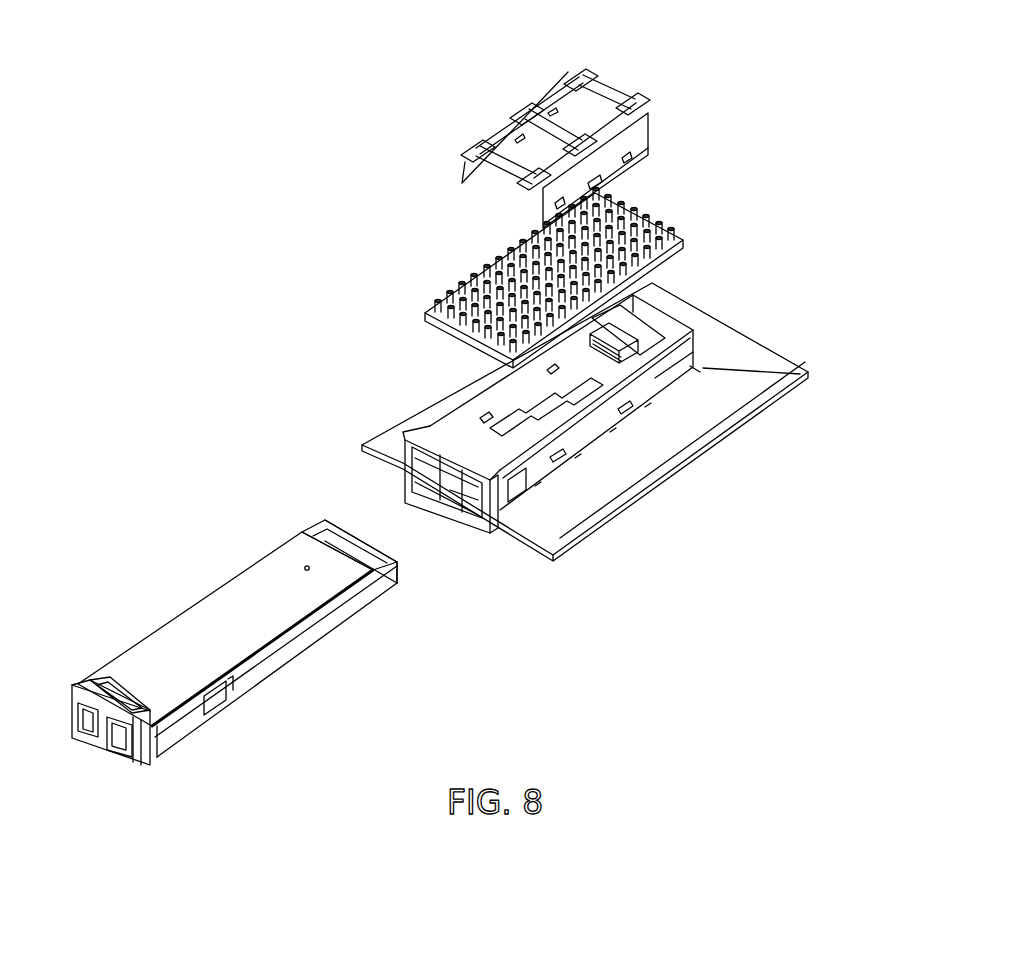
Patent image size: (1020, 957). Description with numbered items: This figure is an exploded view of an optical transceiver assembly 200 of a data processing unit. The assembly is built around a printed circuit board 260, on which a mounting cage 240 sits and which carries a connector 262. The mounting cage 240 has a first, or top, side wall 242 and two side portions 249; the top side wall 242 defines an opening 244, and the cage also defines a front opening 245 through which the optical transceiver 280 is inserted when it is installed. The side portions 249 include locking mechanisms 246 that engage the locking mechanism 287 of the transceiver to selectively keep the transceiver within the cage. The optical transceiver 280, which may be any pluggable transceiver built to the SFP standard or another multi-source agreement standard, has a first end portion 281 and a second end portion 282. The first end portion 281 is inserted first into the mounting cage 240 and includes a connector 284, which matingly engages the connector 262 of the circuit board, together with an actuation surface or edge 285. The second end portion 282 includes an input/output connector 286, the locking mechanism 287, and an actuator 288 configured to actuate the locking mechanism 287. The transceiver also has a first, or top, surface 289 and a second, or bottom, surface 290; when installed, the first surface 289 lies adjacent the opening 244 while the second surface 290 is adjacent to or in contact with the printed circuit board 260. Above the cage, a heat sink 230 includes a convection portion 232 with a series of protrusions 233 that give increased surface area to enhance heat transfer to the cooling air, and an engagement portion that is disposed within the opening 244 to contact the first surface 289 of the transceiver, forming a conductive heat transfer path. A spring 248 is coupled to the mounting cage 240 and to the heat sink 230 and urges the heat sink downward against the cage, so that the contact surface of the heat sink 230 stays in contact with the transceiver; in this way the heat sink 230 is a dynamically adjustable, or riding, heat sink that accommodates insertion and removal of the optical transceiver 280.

The optical transceiver assembly 200 is at (212, 228).
The heat sink 230 is at (663, 223).
The convection portion 232 is at (515, 283).
The protrusions 233 is at (607, 226).
The mounting cage 240 is at (796, 371).
The first side wall 242 is at (652, 312).
The opening 244 is at (530, 392).
The front opening 245 is at (440, 482).
The locking mechanisms 246 is at (519, 490).
The spring 248 is at (582, 68).
The side portions 249 is at (478, 413).
The printed circuit board 260 is at (735, 403).
The connector 262 is at (614, 352).
The optical transceiver 280 is at (169, 523).
The first end portion 281 is at (287, 556).
The second end portion 282 is at (113, 672).
The connector 284 is at (387, 572).
The actuation surface or edge 285 is at (327, 542).
The input/output connector 286 is at (112, 738).
The locking mechanism 287 is at (168, 735).
The actuator 288 is at (117, 717).
The first surface 289 is at (217, 653).
The second surface 290 is at (303, 650).